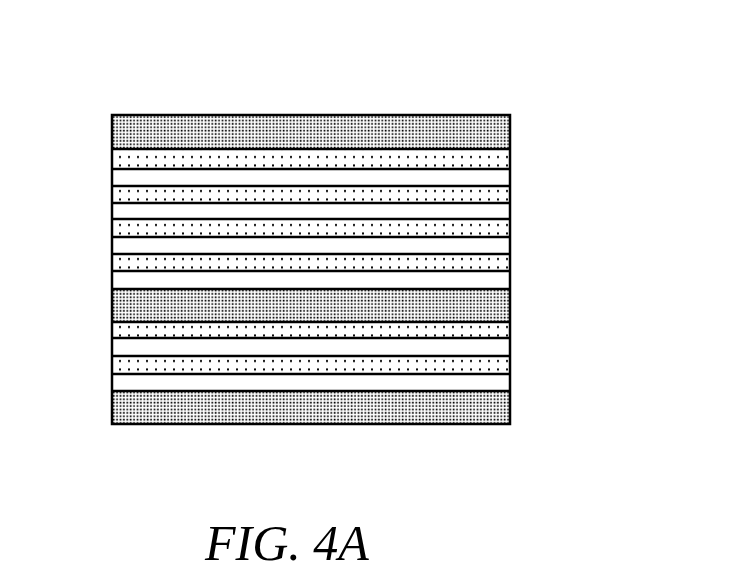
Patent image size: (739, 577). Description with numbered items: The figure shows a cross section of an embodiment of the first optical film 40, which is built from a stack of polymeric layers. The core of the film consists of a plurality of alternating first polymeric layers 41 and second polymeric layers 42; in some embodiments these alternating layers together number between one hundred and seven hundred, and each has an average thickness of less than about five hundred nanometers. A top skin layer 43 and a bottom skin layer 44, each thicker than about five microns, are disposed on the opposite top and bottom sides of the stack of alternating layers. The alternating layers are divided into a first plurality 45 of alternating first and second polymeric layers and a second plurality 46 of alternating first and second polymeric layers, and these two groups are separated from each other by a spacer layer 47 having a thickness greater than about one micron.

The first optical film 40 is at (322, 251).
The first polymeric layer 41 is at (112, 161).
The second polymeric layer 42 is at (112, 178).
The top skin layer 43 is at (198, 115).
The bottom skin layer 44 is at (443, 425).
The first plurality of alternating first and second polymeric layers 45 is at (514, 152).
The second plurality of alternating first and second polymeric layers 46 is at (513, 320).
The spacer layer 47 is at (112, 299).